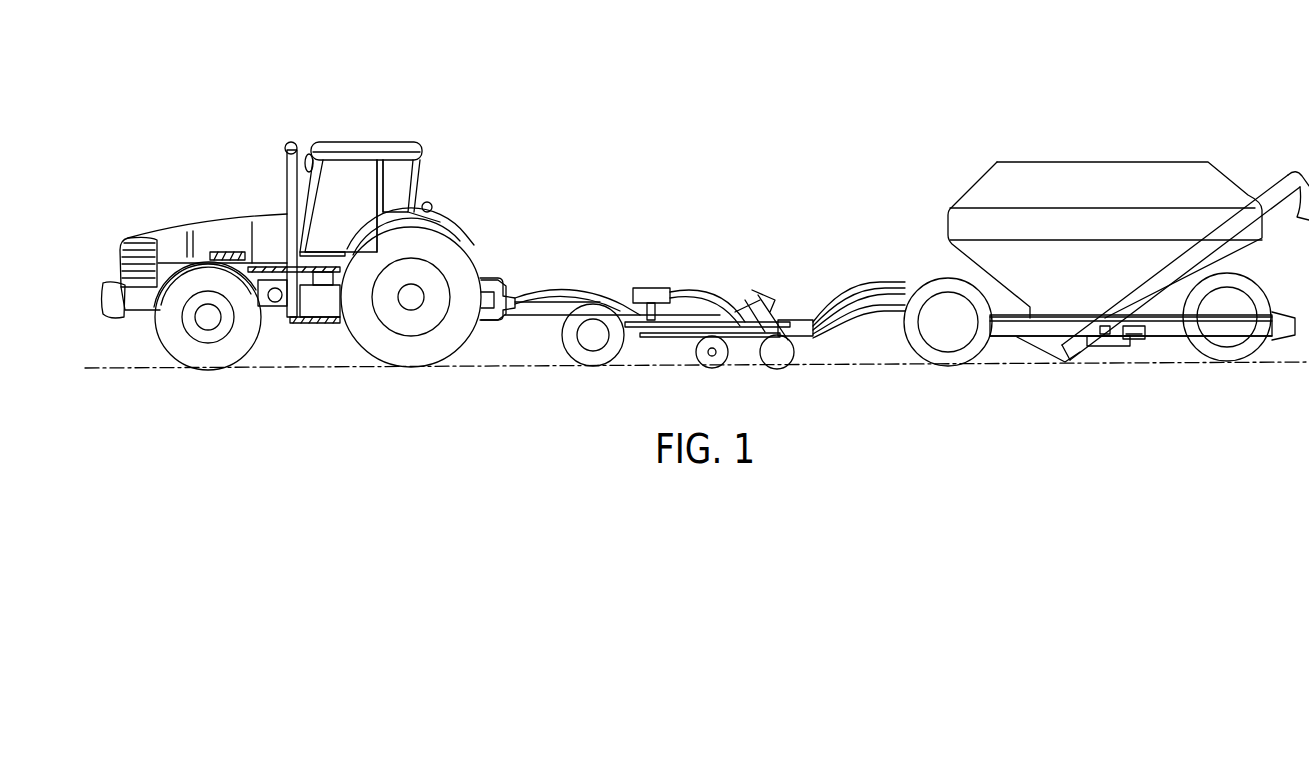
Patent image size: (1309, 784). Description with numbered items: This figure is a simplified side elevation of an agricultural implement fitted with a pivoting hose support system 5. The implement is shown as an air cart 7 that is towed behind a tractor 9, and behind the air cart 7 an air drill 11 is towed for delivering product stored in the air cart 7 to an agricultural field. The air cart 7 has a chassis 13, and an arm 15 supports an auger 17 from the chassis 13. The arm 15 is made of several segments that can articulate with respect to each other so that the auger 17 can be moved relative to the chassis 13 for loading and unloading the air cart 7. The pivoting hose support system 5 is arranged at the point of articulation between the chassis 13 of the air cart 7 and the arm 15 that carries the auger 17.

The pivoting hose support system 5 is at (1145, 343).
The air cart 7 is at (1076, 145).
The tractor 9 is at (366, 112).
The air drill 11 is at (717, 268).
The chassis 13 is at (1005, 340).
The arm 15 is at (1110, 348).
The auger 17 is at (1275, 185).